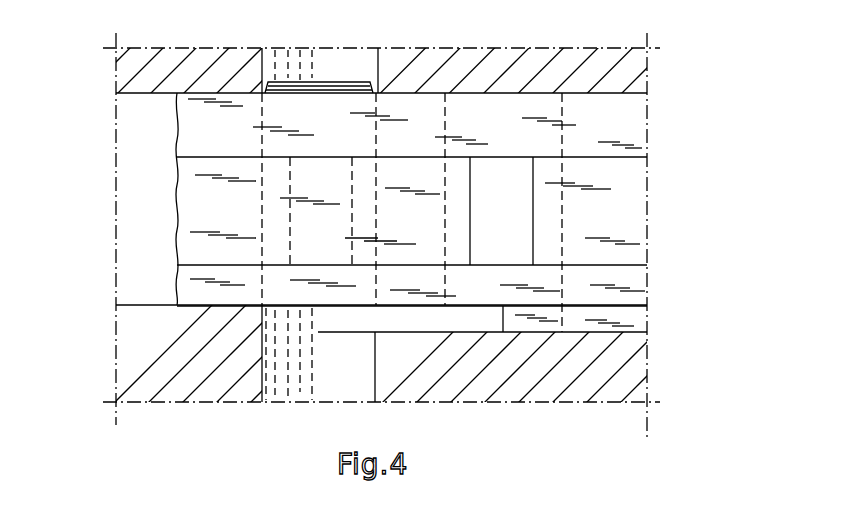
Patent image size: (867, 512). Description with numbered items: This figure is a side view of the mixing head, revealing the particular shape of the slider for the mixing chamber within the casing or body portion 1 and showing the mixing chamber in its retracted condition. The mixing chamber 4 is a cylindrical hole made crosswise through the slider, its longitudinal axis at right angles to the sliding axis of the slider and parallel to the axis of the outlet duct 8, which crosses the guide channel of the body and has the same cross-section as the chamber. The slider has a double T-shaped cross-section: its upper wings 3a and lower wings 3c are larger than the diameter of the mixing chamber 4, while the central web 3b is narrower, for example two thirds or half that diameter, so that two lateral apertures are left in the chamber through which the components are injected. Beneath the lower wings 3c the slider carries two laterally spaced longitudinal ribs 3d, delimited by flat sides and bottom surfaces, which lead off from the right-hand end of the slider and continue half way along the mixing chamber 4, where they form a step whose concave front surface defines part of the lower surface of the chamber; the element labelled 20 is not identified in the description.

The casing or body portion 1 is at (197, 68).
The mixing chamber 4 is at (326, 128).
The upper wings 3a is at (628, 124).
The central web 3b is at (620, 213).
The lower wings 3c is at (628, 283).
The longitudinal ribs 3d is at (632, 320).
The outlet duct 8 is at (328, 377).
The gap 20 is at (500, 318).